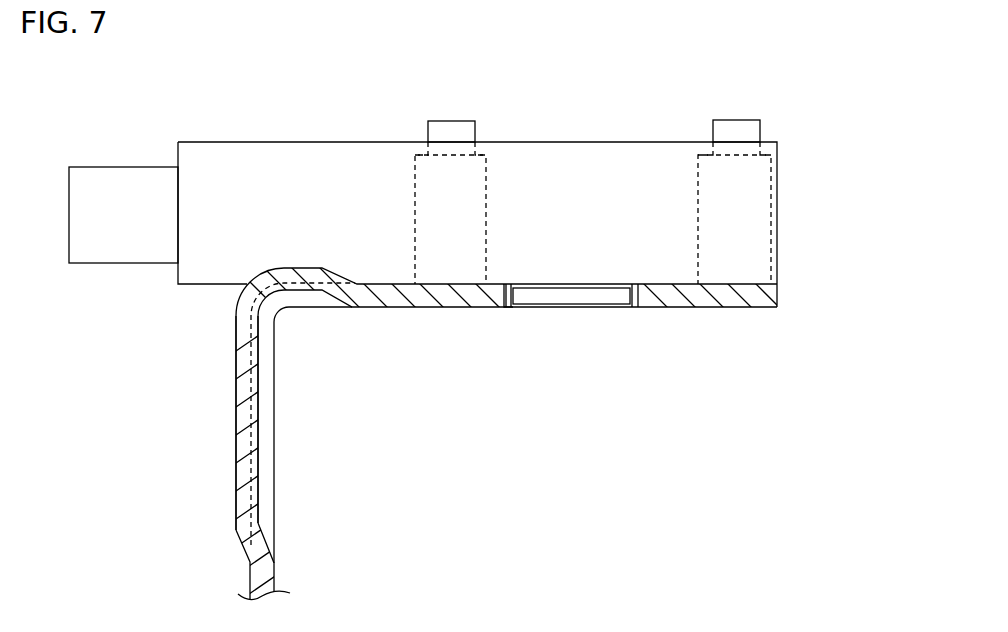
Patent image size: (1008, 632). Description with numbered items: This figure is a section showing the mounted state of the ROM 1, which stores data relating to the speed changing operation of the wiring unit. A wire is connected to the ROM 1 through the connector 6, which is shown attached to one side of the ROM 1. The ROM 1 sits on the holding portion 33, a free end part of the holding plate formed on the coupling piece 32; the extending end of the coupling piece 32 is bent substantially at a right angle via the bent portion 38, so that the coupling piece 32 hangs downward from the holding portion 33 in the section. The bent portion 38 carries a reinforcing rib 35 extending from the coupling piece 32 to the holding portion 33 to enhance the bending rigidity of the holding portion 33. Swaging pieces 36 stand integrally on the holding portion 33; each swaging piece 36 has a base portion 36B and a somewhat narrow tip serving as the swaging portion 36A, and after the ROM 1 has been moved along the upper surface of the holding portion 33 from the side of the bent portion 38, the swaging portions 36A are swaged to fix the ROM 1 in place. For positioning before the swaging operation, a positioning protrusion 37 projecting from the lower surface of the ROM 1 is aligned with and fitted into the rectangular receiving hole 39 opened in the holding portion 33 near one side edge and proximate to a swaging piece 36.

The ROM 1 is at (595, 150).
The connector 6 is at (127, 175).
The coupling piece 32 is at (268, 573).
The holding portion 33 is at (670, 300).
The reinforcing rib 35 is at (240, 410).
The swaging piece 36 is at (422, 190).
The swaging portion 36A is at (753, 126).
The base portion 36B is at (757, 217).
The positioning protrusion 37 is at (580, 296).
The bent portion 38 is at (280, 310).
The receiving hole 39 is at (511, 296).